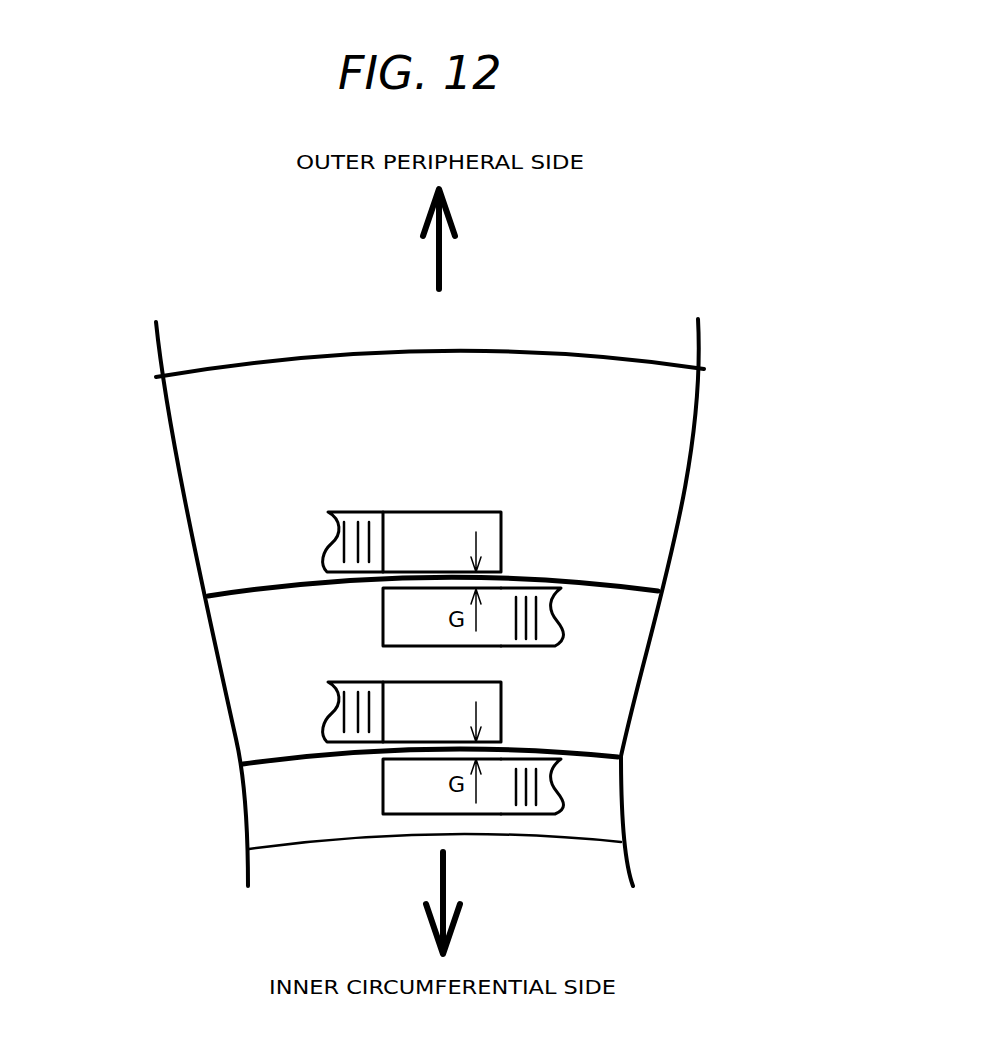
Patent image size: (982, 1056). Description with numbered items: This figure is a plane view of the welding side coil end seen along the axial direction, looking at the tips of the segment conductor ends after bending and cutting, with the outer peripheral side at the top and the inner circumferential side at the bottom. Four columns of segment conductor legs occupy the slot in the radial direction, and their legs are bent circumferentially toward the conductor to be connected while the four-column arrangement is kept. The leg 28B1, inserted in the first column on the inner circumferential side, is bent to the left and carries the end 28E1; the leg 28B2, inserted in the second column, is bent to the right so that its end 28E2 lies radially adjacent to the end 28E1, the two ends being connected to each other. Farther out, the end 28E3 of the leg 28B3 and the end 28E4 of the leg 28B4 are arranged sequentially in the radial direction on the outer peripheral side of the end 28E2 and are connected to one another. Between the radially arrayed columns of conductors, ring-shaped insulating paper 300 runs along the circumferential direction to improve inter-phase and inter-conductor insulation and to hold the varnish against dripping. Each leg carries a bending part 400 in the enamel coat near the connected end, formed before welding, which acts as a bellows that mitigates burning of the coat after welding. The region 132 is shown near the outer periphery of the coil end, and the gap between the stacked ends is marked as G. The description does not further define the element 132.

The core outer portion 132 is at (388, 373).
The insulating paper 300 is at (575, 582).
The bending part 400 is at (349, 545).
The leg 28B4 is at (347, 543).
The end 28E4 is at (442, 527).
The end 28E3 is at (400, 612).
The leg 28B3 is at (542, 612).
The leg 28B2 is at (352, 713).
The end 28E2 is at (490, 715).
The end 28E1 is at (408, 798).
The leg 28B1 is at (532, 797).